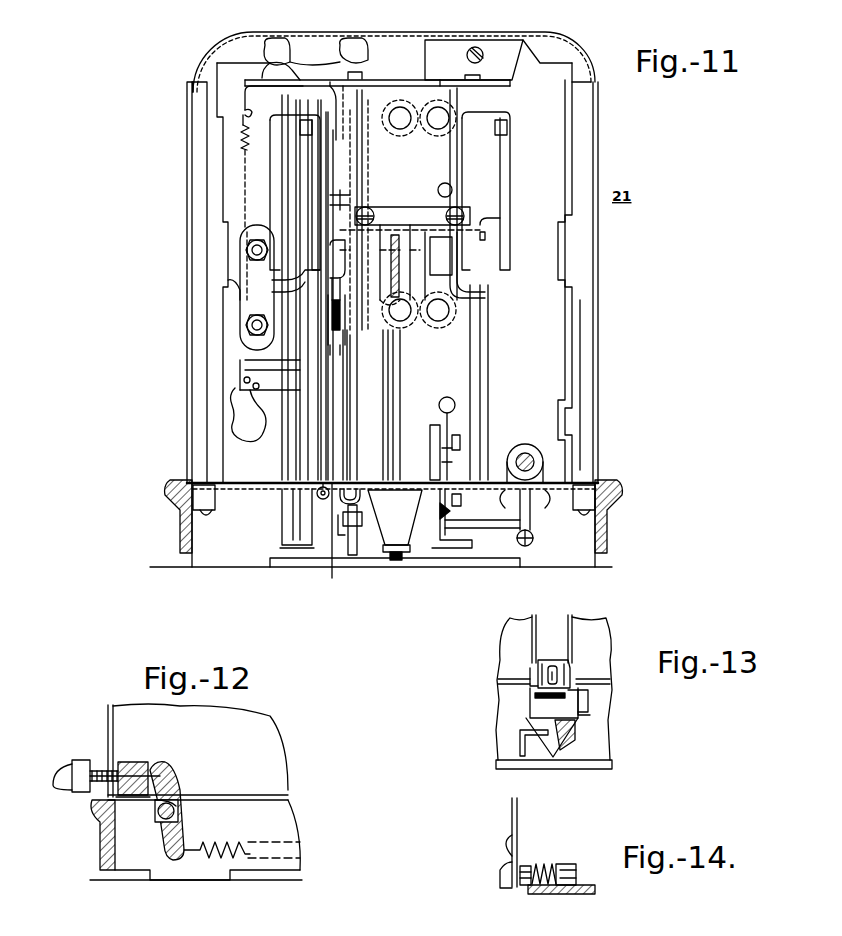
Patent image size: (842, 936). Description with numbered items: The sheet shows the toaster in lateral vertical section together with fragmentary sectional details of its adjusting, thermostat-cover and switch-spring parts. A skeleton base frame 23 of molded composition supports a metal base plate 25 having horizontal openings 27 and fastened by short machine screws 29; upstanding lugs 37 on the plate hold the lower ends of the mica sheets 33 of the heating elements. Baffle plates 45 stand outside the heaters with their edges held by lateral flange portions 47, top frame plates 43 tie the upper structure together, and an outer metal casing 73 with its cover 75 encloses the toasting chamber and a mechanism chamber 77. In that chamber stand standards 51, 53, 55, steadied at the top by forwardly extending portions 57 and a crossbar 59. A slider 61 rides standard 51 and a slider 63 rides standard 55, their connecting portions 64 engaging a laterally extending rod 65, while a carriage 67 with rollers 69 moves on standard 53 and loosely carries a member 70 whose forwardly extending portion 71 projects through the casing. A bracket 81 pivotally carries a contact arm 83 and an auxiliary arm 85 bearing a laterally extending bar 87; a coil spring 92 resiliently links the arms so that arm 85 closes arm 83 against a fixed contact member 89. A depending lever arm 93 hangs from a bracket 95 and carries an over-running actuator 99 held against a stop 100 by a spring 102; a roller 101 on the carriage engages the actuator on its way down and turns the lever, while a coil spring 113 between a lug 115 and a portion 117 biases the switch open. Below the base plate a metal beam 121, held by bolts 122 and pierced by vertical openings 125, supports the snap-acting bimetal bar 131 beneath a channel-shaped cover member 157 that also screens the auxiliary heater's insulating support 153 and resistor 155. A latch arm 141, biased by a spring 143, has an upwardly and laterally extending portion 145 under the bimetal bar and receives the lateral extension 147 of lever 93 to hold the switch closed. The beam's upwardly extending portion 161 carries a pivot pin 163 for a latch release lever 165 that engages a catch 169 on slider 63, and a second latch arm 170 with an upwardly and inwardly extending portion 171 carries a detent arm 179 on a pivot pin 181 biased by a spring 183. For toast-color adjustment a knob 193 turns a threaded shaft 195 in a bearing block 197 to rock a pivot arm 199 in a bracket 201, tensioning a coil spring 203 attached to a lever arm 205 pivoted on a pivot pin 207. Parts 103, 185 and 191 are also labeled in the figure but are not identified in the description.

In FIG. 11, the skeleton base frame 23 is at (165, 500).
In FIG. 12, the skeleton base frame 23 is at (100, 822).
In FIG. 11, the metal base plate 25 is at (245, 483).
In FIG. 12, the metal base plate 25 is at (252, 795).
In FIG. 13, the horizontal openings 27 is at (500, 683).
In FIG. 11, the short machine screws 29 is at (178, 528).
In FIG. 13, the sheets of electric-insulating material 33 is at (532, 630).
In FIG. 13, the upstanding lugs 37 is at (575, 668).
In FIG. 11, the top frame plates 43 is at (340, 50).
In FIG. 11, the baffle plates 45 is at (574, 168).
In FIG. 11, the lateral flange portions 47 is at (565, 118).
In FIG. 11, the standard 51 is at (300, 448).
In FIG. 11, the standard 53 is at (400, 373).
In FIG. 11, the standard 55 is at (490, 366).
In FIG. 11, the forwardly extending portions 57 is at (282, 72).
In FIG. 11, the crossbar 59 is at (408, 80).
In FIG. 11, the slider 61 is at (282, 156).
In FIG. 11, the slider 63 is at (505, 210).
In FIG. 11, the connecting portions 64 is at (290, 195).
In FIG. 11, the laterally-extending rod 65 is at (487, 236).
In FIG. 11, the carriage 67 is at (457, 153).
In FIG. 11, the rollers 69 is at (418, 128).
In FIG. 11, the member 70 is at (412, 207).
In FIG. 11, the forwardly extending portion 71 is at (399, 268).
In FIG. 11, the outer metal casing 73 is at (598, 312).
In FIG. 12, the outer metal casing 73 is at (108, 710).
In FIG. 11, the cover 75 is at (212, 58).
In FIG. 11, the mechanism chamber 77 is at (535, 275).
In FIG. 11, the bracket 81 is at (240, 300).
In FIG. 11, the contact arm 83 is at (258, 412).
In FIG. 14, the contact arm 83 is at (550, 895).
In FIG. 11, the auxiliary arm 85 is at (262, 390).
In FIG. 14, the auxiliary arm 85 is at (500, 864).
In FIG. 11, the laterally extending bar 87 is at (275, 370).
In FIG. 14, the laterally extending bar 87 is at (518, 807).
In FIG. 11, the fixed contact member 89 is at (235, 440).
In FIG. 14, the coil spring 92 is at (546, 866).
In FIG. 11, the depending lever arm 93 is at (362, 154).
In FIG. 11, the bracket 95 is at (350, 80).
In FIG. 11, the over-running actuator 99 is at (342, 325).
In FIG. 11, the stop 100 is at (340, 345).
In FIG. 11, the roller 101 is at (350, 197).
In FIG. 11, the spring 102 is at (334, 270).
In FIG. 11, the pivot 103 is at (316, 498).
In FIG. 11, the coil spring 113 is at (240, 137).
In FIG. 11, the lug 115 is at (230, 283).
In FIG. 11, the portion 117 is at (245, 92).
In FIG. 11, the longitudinally extending metal beam 121 is at (400, 540).
In FIG. 13, the longitudinally extending metal beam 121 is at (572, 735).
In FIG. 11, the bolts 122 is at (396, 560).
In FIG. 13, the vertical openings 125 is at (553, 757).
In FIG. 13, the snap-acting bimetal bar 131 is at (535, 706).
In FIG. 11, the latch arm 141 is at (360, 506).
In FIG. 13, the latch arm 141 is at (520, 745).
In FIG. 11, the spring 143 is at (352, 545).
In FIG. 13, the upwardly and laterally extending portion 145 is at (535, 728).
In FIG. 11, the lateral extension 147 is at (355, 510).
In FIG. 13, the insulating support 153 is at (528, 676).
In FIG. 13, the resistor 155 is at (553, 665).
In FIG. 13, the cover member 157 is at (532, 700).
In FIG. 11, the upwardly extending portion 161 is at (428, 430).
In FIG. 11, the pivot pin 163 is at (460, 435).
In FIG. 11, the latch release lever 165 is at (447, 397).
In FIG. 11, the catch 169 is at (446, 275).
In FIG. 11, the second latch arm 170 is at (450, 548).
In FIG. 13, the second latch arm 170 is at (590, 716).
In FIG. 13, the upwardly and inwardly extending portion 171 is at (590, 698).
In FIG. 11, the detent arm 179 is at (440, 450).
In FIG. 11, the pivot pin 181 is at (461, 500).
In FIG. 11, the spring 183 is at (452, 512).
In FIG. 11, the slot 185 is at (368, 169).
In FIG. 11, the pin 191 is at (440, 463).
In FIG. 12, the knob 193 is at (65, 772).
In FIG. 11, the shaft 195 is at (535, 460).
In FIG. 12, the shaft 195 is at (108, 770).
In FIG. 11, the bearing block 197 is at (540, 475).
In FIG. 12, the bearing block 197 is at (138, 762).
In FIG. 11, the pivot arm 199 is at (532, 527).
In FIG. 12, the pivot arm 199 is at (176, 778).
In FIG. 11, the bracket 201 is at (538, 495).
In FIG. 12, the bracket 201 is at (183, 802).
In FIG. 11, the coil spring 203 is at (533, 540).
In FIG. 12, the coil spring 203 is at (232, 843).
In FIG. 11, the lever arm 205 is at (296, 534).
In FIG. 11, the pivot pin 207 is at (300, 546).